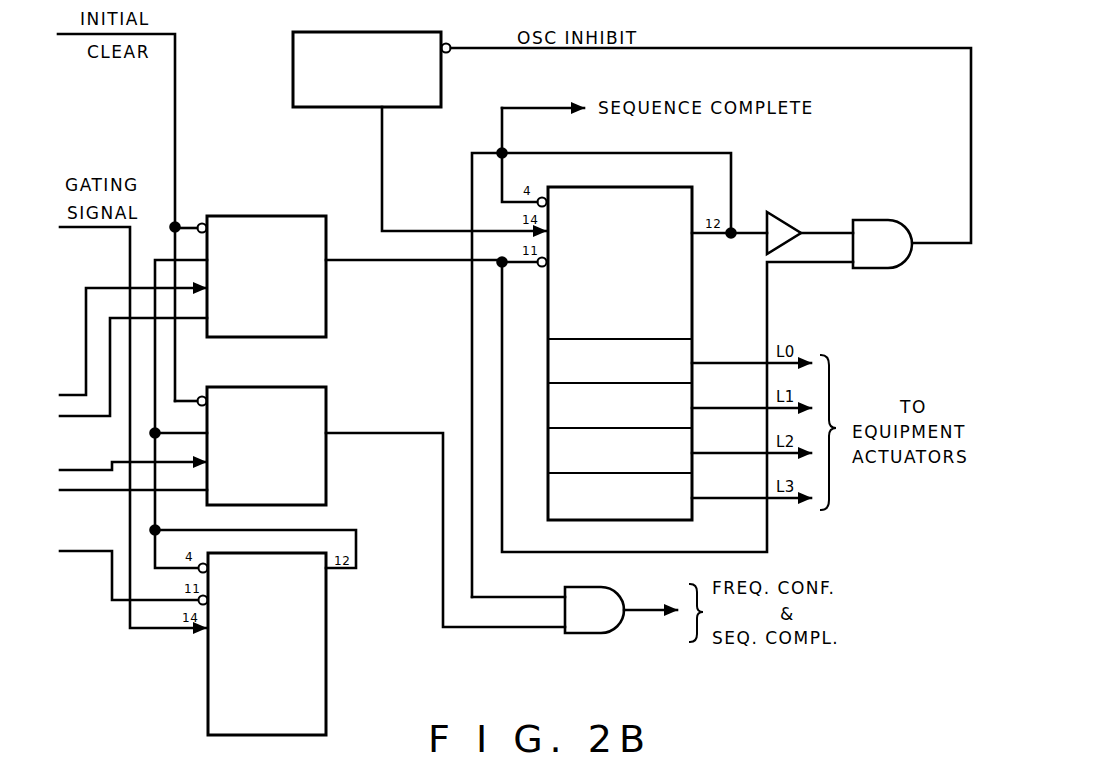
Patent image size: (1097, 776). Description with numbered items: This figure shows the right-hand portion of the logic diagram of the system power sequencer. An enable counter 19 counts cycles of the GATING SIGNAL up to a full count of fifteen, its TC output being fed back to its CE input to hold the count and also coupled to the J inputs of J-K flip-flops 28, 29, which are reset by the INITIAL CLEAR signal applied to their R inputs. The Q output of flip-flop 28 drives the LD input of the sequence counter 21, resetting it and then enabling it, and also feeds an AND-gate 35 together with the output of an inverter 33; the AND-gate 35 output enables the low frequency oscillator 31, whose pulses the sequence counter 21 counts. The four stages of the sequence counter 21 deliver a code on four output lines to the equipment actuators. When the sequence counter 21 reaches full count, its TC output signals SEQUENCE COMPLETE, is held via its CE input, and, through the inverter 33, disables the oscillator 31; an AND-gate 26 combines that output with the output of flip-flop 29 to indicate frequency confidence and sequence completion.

The low frequency oscillator 31 is at (411, 32).
The J-K flip-flop 28 is at (326, 228).
The J-K flip-flop 29 is at (326, 397).
The enable counter 19 is at (326, 610).
The sequence counter 21 is at (692, 334).
The inverter 33 is at (780, 214).
The AND-gate 35 is at (905, 220).
The AND-gate 26 is at (598, 636).